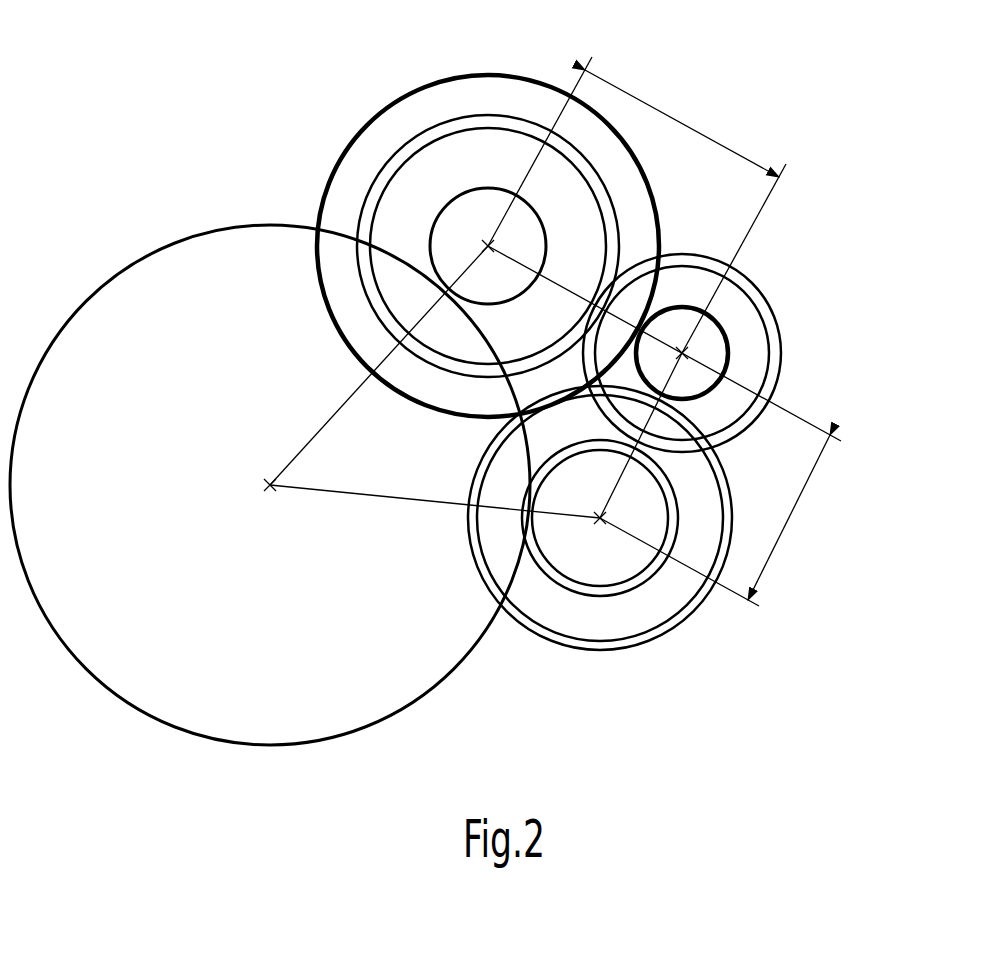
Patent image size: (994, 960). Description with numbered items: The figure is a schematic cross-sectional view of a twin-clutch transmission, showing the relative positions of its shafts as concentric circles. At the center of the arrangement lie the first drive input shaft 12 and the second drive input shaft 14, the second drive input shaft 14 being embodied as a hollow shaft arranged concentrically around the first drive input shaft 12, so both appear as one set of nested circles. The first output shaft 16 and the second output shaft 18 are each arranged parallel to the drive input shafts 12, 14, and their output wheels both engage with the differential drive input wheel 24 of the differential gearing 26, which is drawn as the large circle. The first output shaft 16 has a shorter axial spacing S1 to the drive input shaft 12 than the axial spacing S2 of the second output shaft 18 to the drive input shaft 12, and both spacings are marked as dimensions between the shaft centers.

The first drive input shaft 12 is at (719, 353).
The second drive input shaft 14 is at (690, 350).
The first output shaft 16 is at (606, 527).
The second output shaft 18 is at (483, 243).
The differential drive input wheel 24 is at (265, 748).
The differential gearing 26 is at (270, 483).
The axial spacing S1 is at (788, 513).
The axial spacing S2 is at (675, 117).